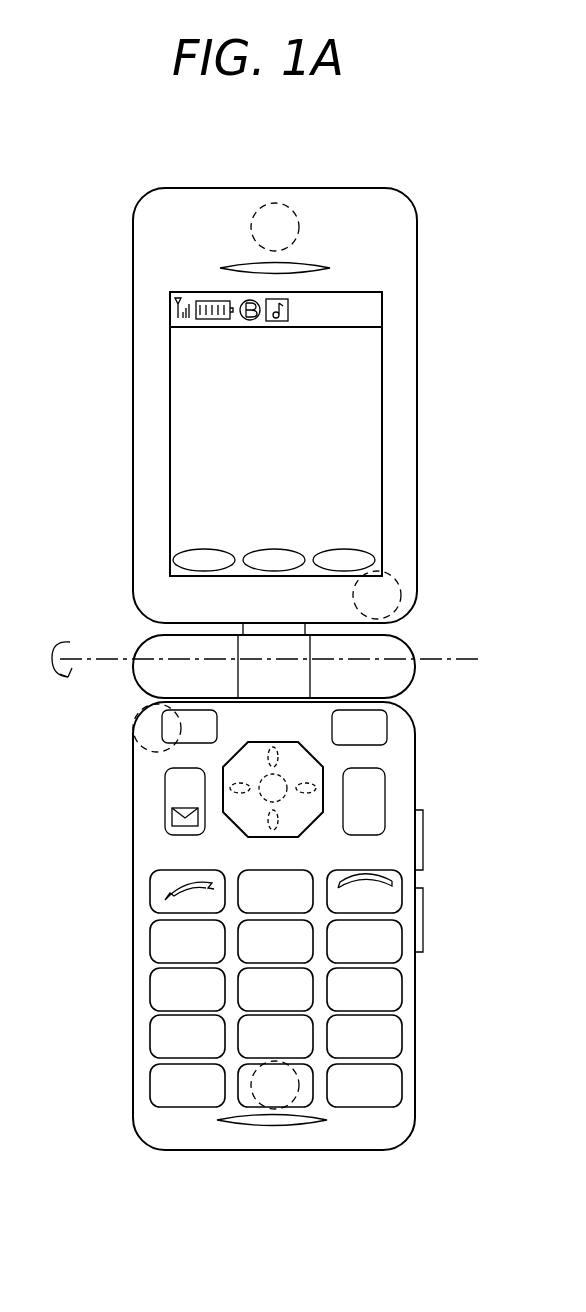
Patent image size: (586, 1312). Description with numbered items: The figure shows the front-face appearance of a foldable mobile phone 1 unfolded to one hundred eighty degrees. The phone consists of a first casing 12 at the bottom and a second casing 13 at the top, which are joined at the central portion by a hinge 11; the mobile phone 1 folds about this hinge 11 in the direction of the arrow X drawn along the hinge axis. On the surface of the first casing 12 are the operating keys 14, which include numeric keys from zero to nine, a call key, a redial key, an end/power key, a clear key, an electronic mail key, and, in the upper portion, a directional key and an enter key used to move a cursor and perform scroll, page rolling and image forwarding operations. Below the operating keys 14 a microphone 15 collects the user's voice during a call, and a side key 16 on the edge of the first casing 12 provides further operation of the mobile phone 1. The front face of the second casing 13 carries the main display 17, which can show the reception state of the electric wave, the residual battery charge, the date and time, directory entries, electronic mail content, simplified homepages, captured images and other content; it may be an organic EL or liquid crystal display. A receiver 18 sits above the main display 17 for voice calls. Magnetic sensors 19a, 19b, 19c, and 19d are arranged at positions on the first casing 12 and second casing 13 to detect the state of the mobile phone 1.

The mobile phone 1 is at (440, 968).
The hinge 11 is at (415, 641).
The first casing 12 is at (415, 734).
The second casing 13 is at (398, 389).
The operating keys 14 is at (118, 727).
The microphone 15 is at (318, 1120).
The side key 16 is at (425, 830).
The main display 17 is at (370, 346).
The receiver 18 is at (330, 266).
The magnetic sensor 19a is at (300, 222).
The magnetic sensor 19b is at (300, 1076).
The magnetic sensor 19c is at (400, 593).
The magnetic sensor 19d is at (126, 703).